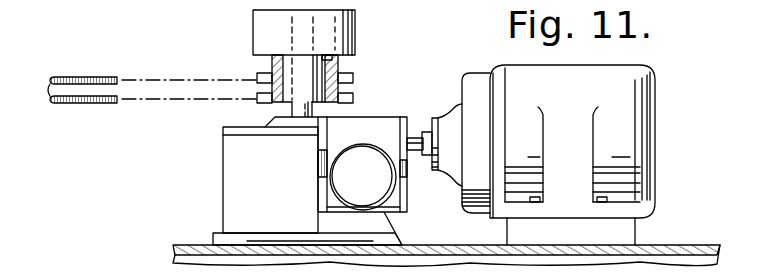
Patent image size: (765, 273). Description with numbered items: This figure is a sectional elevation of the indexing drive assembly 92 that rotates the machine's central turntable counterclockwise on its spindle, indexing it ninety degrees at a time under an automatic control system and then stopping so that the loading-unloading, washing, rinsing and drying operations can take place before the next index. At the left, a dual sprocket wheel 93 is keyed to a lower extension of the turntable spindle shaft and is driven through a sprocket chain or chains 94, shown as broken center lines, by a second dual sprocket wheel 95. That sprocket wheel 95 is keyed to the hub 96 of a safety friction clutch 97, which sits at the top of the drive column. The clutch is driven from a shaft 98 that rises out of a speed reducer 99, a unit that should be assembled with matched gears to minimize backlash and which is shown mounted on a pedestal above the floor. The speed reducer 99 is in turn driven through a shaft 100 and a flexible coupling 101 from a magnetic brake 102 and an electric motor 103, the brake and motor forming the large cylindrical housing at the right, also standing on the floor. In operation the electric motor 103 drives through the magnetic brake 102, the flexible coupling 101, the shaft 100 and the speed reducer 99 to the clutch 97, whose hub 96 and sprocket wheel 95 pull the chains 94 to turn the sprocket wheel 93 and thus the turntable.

The indexing drive assembly 92 is at (153, 213).
The dual sprocket wheel 93 is at (112, 78).
The sprocket chain 94 is at (198, 80).
The dual sprocket wheel 95 is at (338, 78).
The hub 96 is at (330, 56).
The safety friction clutch 97 is at (355, 24).
The shaft 98 is at (313, 113).
The speed reducer 99 is at (382, 223).
The shaft 100 is at (418, 137).
The flexible coupling 101 is at (436, 117).
The magnetic brake 102 is at (475, 80).
The electric motor 103 is at (640, 111).